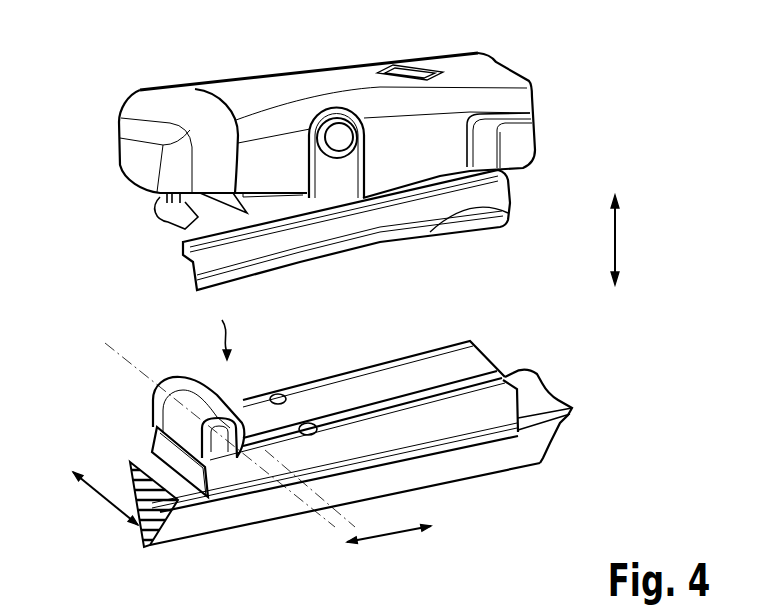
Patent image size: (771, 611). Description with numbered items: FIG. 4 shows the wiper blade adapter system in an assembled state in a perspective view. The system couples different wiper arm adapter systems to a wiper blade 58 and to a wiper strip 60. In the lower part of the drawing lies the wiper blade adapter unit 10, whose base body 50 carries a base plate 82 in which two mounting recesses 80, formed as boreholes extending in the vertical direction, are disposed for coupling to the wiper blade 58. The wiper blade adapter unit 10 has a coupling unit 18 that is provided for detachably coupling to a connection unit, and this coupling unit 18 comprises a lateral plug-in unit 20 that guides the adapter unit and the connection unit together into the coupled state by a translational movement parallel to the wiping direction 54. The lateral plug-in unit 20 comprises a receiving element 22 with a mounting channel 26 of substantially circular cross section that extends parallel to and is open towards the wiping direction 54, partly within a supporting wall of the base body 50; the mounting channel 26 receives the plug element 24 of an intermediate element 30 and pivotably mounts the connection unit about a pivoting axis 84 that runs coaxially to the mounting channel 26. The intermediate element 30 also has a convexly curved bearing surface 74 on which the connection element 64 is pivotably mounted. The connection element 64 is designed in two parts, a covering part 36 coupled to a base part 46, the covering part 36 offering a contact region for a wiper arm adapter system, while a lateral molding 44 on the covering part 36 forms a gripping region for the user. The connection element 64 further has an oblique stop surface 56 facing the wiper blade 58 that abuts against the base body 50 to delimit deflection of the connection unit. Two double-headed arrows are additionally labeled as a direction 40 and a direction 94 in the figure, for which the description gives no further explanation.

The wiper blade adapter unit 10 is at (560, 372).
The coupling unit 18 is at (221, 325).
The lateral plug-in unit 20 is at (128, 397).
The receiving element 22 is at (180, 392).
The plug element 24 is at (167, 215).
The mounting channel 26 is at (218, 443).
The intermediate element 30 is at (391, 221).
The covering part 36 is at (508, 82).
The vertical direction 40 is at (616, 240).
The lateral molding 44 is at (522, 141).
The base part 46 is at (128, 143).
The base body 50 is at (467, 373).
The wiping direction 54 is at (103, 497).
The oblique stop surface 56 is at (169, 213).
The wiper blade 58 is at (491, 457).
The wiper strip 60 is at (130, 467).
The connection element 64 is at (523, 118).
The bearing surface 74 is at (340, 150).
The mounting recesses 80 is at (311, 423).
The base plate 82 is at (405, 380).
The pivoting axis 84 is at (125, 362).
The longitudinal direction 94 is at (390, 534).